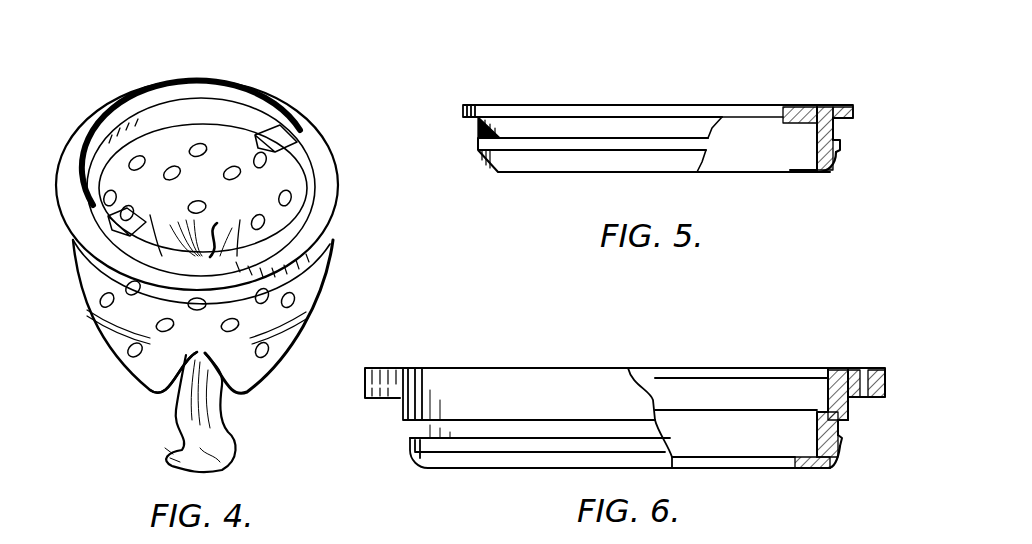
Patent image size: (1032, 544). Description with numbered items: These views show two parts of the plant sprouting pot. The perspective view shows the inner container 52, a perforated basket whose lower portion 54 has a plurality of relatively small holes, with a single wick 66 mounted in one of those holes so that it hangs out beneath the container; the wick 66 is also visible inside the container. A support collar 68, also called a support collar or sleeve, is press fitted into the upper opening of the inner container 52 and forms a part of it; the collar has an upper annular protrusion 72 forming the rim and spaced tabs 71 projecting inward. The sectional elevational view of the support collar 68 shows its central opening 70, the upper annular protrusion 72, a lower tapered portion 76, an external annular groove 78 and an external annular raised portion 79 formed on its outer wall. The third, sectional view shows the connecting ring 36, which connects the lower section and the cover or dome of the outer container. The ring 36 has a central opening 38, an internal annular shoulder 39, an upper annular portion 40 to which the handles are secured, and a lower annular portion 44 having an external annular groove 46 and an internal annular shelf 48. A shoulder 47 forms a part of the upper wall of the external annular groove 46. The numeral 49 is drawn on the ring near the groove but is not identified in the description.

In FIG. 6, the connecting ring 36 is at (622, 421).
In FIG. 6, the central opening 38 is at (827, 395).
In FIG. 6, the internal annular shoulder 39 is at (827, 408).
In FIG. 6, the upper annular portion 40 is at (847, 405).
In FIG. 6, the lower annular portion 44 is at (842, 447).
In FIG. 6, the external annular groove 46 is at (415, 425).
In FIG. 6, the shoulder 47 is at (842, 422).
In FIG. 6, the internal annular shelf 48 is at (795, 458).
In FIG. 6, the lower flange 49 is at (408, 445).
In FIG. 4, the inner container 52 is at (332, 250).
In FIG. 4, the lower portion 54 is at (255, 393).
In FIG. 4, the wick 66 is at (208, 233).
In FIG. 4, the support collar 68 is at (235, 262).
In FIG. 5, the support collar 68 is at (678, 139).
In FIG. 5, the central opening 70 is at (818, 143).
In FIG. 4, the spaced tabs 71 is at (273, 137).
In FIG. 4, the upper annular protrusion 72 is at (258, 95).
In FIG. 5, the upper annular protrusion 72 is at (852, 107).
In FIG. 5, the lower tapered portion 76 is at (838, 163).
In FIG. 5, the external annular groove 78 is at (837, 127).
In FIG. 5, the external annular raised portion 79 is at (840, 147).